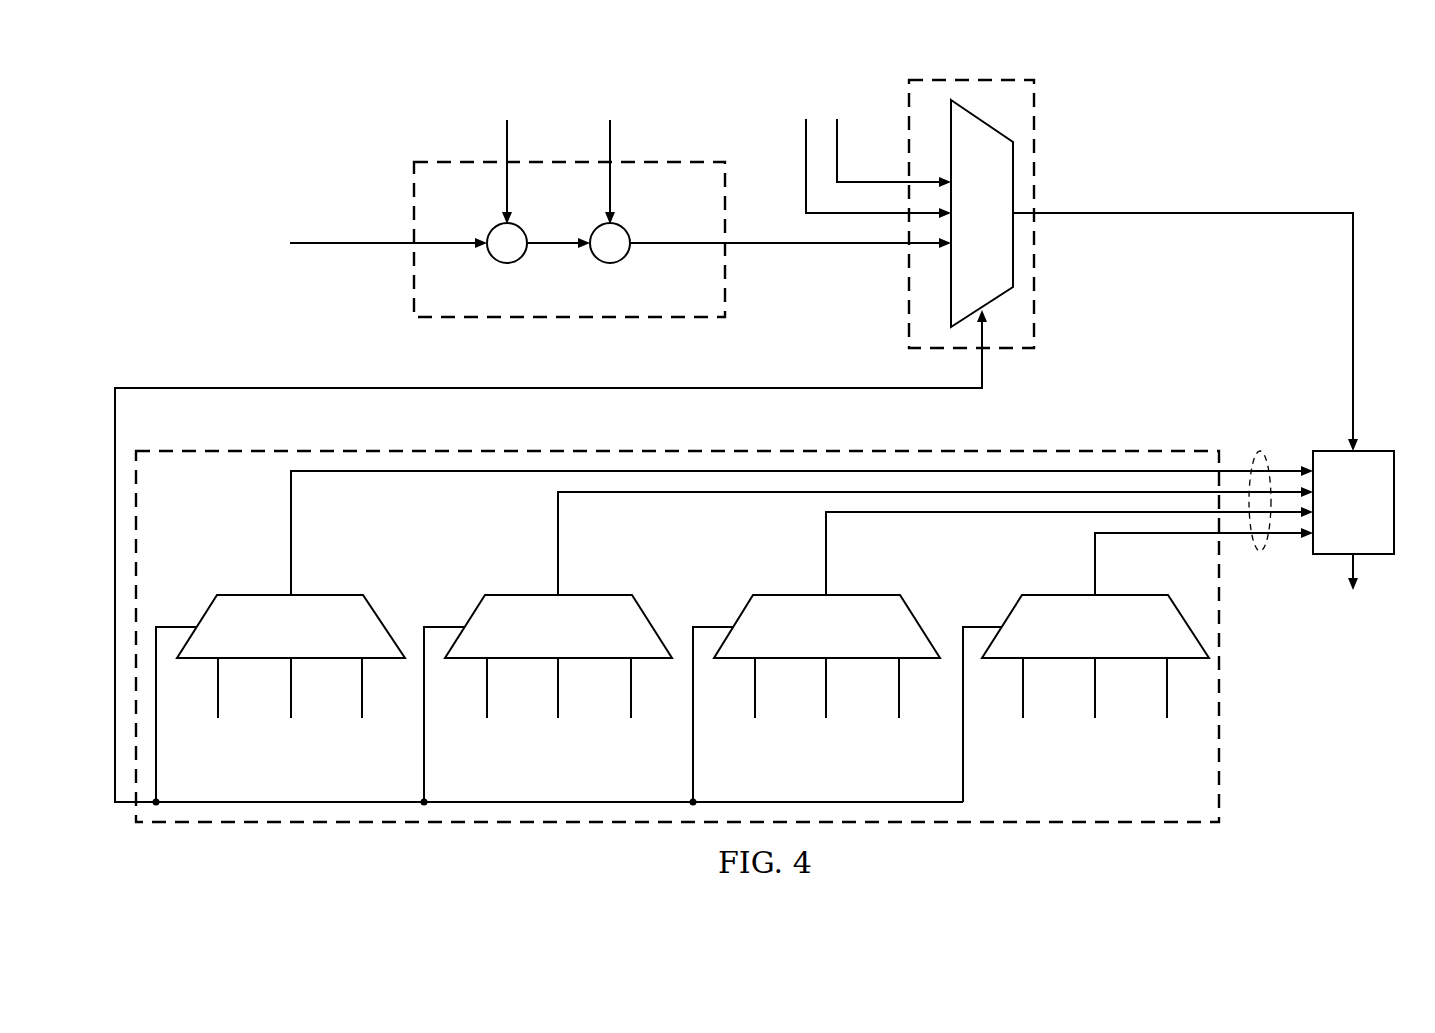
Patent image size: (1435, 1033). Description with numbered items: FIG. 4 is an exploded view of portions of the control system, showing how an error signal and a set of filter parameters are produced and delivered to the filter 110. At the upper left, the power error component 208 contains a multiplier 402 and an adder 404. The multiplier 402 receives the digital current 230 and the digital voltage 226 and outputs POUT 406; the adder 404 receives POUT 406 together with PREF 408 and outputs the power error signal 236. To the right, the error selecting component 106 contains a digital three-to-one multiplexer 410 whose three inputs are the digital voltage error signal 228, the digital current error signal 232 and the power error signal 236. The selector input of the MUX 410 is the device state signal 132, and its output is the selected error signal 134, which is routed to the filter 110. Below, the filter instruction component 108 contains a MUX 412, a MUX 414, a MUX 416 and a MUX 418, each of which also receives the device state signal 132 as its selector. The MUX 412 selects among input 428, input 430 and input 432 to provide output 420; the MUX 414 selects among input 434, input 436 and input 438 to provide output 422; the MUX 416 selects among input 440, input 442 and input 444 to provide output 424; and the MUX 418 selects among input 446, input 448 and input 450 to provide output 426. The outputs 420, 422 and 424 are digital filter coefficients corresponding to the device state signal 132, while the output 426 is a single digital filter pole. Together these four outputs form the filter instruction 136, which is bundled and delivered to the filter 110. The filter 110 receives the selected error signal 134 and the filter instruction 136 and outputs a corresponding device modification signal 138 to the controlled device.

The error selecting component 106 is at (930, 74).
The filter instruction component 108 is at (282, 446).
The filter 110 is at (1353, 502).
The device state signal 132 is at (346, 387).
The selected error signal 134 is at (1180, 212).
The filter instruction 136 is at (1260, 552).
The device modification signal 138 is at (1362, 571).
The power error component 208 is at (473, 156).
The digital voltage 226 is at (502, 192).
The digital voltage error signal 228 is at (866, 182).
The digital current 230 is at (342, 243).
The digital current error signal 232 is at (802, 167).
The power error signal 236 is at (793, 246).
The multiplier 402 is at (494, 264).
The adder 404 is at (596, 264).
The POUT 406 is at (553, 242).
The PREF 408 is at (614, 138).
The multiplexer 410 is at (982, 213).
The multiplexer 412 is at (280, 698).
The multiplexer 414 is at (548, 698).
The multiplexer 416 is at (816, 698).
The multiplexer 418 is at (1086, 698).
The output 420 is at (290, 535).
The output 422 is at (557, 545).
The output 424 is at (825, 555).
The output 426 is at (1093, 565).
The input 428 is at (218, 718).
The input 430 is at (291, 718).
The input 432 is at (362, 718).
The input 434 is at (487, 718).
The input 436 is at (558, 718).
The input 438 is at (631, 718).
The input 440 is at (755, 718).
The input 442 is at (826, 718).
The input 444 is at (899, 718).
The input 446 is at (1023, 718).
The input 448 is at (1095, 718).
The input 450 is at (1167, 718).